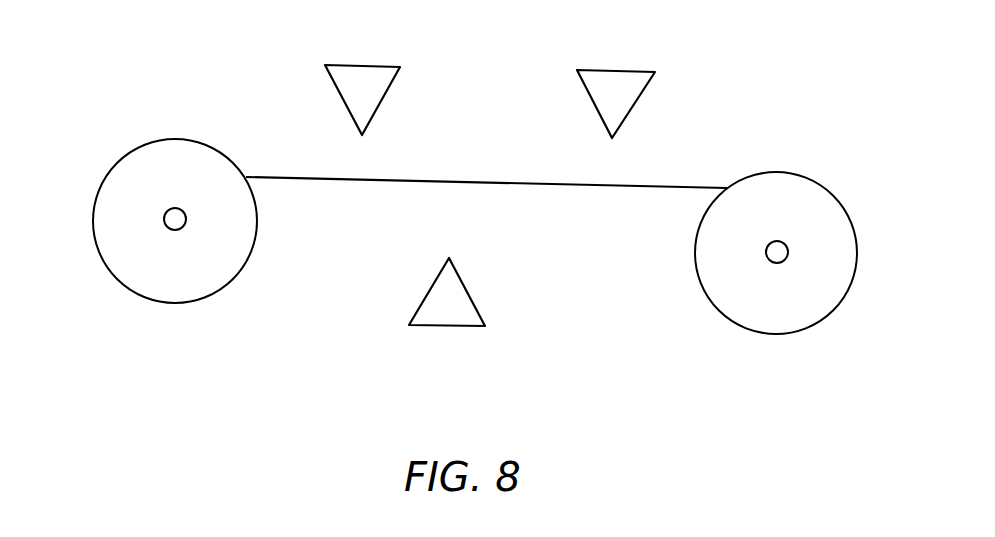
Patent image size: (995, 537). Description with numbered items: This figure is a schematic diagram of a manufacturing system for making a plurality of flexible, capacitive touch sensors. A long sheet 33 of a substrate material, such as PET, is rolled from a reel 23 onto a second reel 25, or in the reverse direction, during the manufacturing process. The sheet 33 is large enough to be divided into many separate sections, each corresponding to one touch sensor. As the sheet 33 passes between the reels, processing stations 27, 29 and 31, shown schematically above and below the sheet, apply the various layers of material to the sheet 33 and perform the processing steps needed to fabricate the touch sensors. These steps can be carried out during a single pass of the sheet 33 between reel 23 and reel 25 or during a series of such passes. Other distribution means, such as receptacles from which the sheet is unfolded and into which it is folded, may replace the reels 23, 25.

The reel 23 is at (120, 282).
The reel 25 is at (802, 330).
The processing station 27 is at (360, 63).
The processing station 29 is at (613, 69).
The processing station 31 is at (472, 297).
The sheet 33 is at (312, 178).